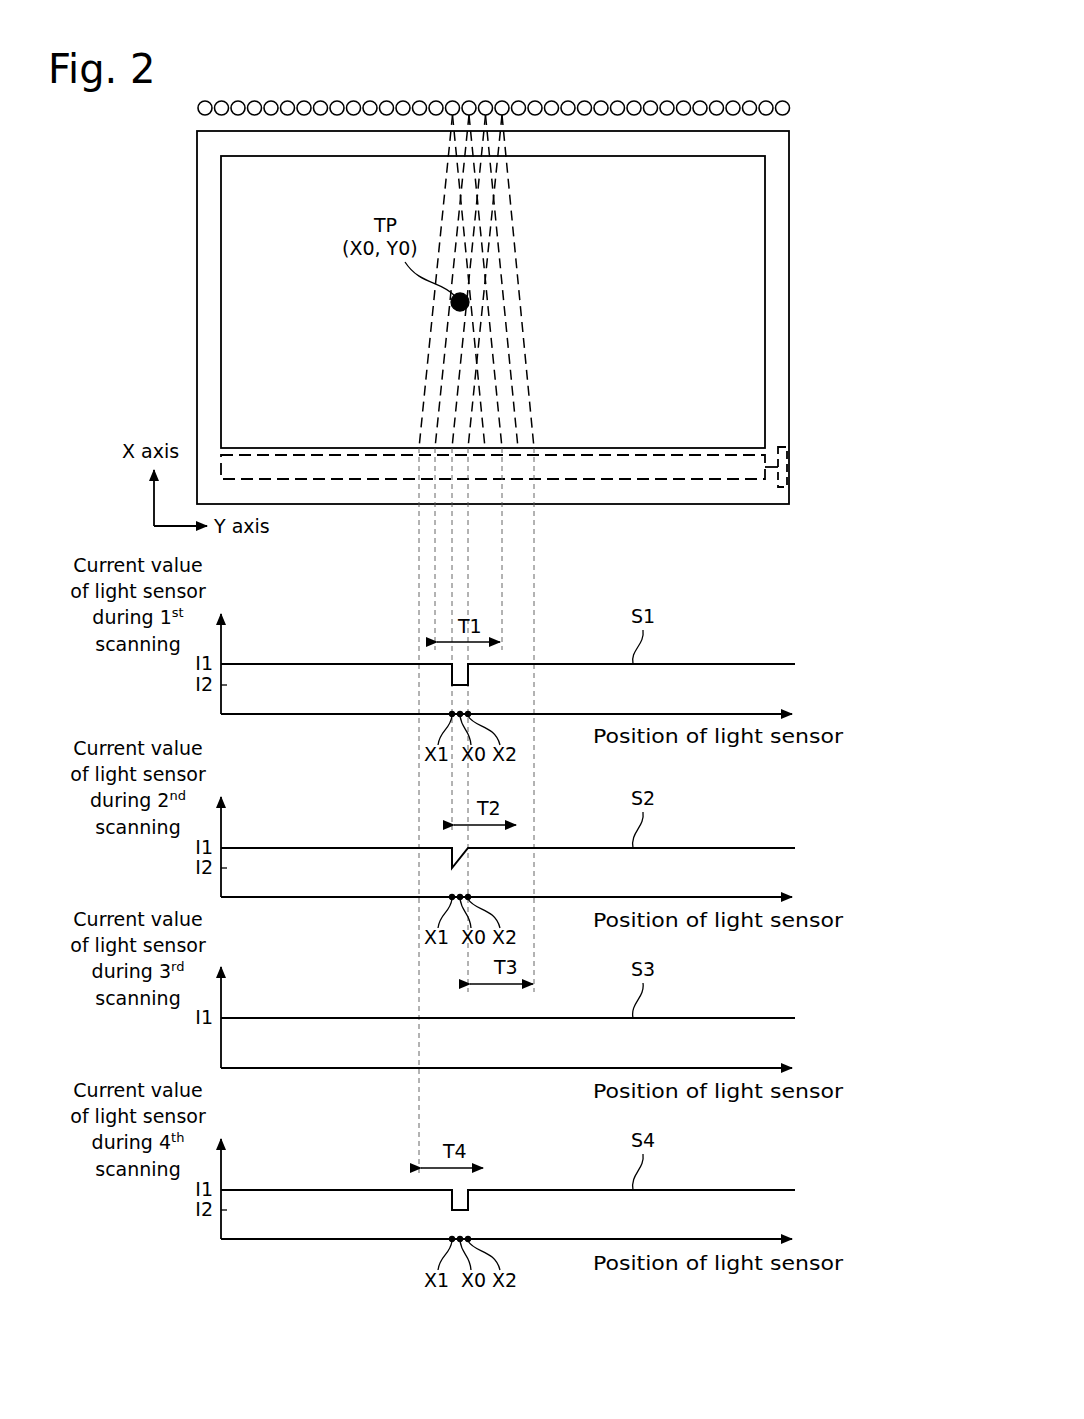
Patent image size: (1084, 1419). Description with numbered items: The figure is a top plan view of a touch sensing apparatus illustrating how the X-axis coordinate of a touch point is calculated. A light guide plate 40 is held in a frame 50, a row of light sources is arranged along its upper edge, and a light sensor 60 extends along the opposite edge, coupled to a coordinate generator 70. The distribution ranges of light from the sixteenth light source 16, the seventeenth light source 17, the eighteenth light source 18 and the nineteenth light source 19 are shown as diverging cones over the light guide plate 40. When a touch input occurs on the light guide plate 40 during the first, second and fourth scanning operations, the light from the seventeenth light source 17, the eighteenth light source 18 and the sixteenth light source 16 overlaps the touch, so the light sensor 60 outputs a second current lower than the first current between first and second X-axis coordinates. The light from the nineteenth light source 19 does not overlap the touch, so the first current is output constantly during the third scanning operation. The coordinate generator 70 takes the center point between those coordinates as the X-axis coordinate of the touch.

The sixteenth light source 16 is at (452, 100).
The seventeenth light source 17 is at (469, 100).
The eighteenth light source 18 is at (486, 100).
The nineteenth light source 19 is at (503, 100).
The light guide plate 40 is at (766, 315).
The frame 50 is at (783, 241).
The light sensor 60 is at (711, 480).
The coordinate generator 70 is at (785, 447).